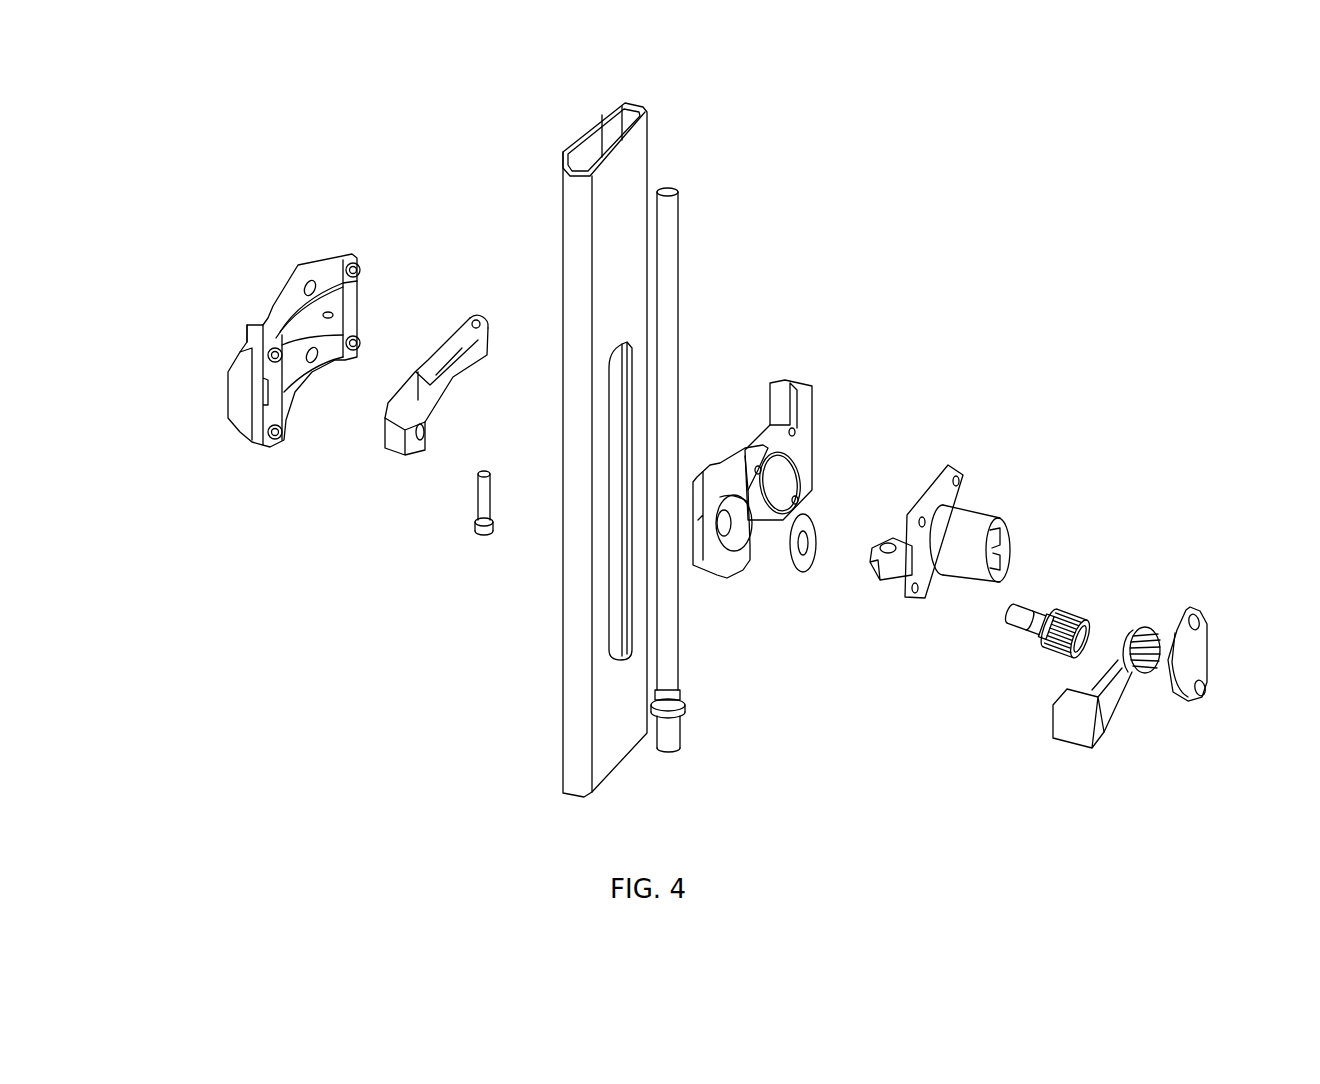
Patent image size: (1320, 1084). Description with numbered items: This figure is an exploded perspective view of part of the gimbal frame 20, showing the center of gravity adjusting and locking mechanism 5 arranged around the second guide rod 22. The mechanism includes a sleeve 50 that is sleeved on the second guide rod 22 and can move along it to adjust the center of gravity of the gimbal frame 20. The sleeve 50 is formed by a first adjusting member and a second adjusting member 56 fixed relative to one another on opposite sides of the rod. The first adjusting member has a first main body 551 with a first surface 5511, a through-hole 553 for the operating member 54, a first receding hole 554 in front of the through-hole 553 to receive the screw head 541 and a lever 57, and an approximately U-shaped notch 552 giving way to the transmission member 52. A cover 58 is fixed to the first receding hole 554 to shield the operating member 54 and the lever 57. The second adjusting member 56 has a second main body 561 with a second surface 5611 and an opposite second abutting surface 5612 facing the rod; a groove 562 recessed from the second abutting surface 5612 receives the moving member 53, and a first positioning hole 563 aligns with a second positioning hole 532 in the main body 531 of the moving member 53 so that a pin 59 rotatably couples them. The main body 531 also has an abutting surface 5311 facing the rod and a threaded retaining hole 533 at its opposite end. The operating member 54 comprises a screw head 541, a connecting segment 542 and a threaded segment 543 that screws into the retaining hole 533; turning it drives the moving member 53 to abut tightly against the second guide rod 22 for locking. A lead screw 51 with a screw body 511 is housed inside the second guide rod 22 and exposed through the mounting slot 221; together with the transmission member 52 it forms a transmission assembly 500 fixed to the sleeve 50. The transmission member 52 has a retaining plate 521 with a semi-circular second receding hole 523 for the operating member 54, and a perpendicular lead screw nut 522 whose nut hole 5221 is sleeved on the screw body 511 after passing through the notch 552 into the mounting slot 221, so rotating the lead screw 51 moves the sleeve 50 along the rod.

The center of gravity adjusting and locking mechanism 5 is at (858, 318).
The gimbal frame 20 is at (548, 702).
The second guide rod 22 is at (632, 168).
The mounting slot 221 is at (614, 620).
The sleeve 50 is at (825, 405).
The lead screw 51 is at (668, 668).
The screw body 511 is at (670, 240).
The transmission member 52 is at (966, 675).
The retaining plate 521 is at (932, 587).
The lead screw nut 522 is at (893, 572).
The nut hole 5221 is at (882, 545).
The second receding hole 523 is at (962, 548).
The moving member 53 is at (402, 443).
The main body 531 is at (436, 370).
The abutting surface 5311 is at (442, 385).
The second positioning hole 532 is at (480, 319).
The retaining hole 533 is at (424, 434).
The operating member 54 is at (1052, 500).
The screw head 541 is at (1085, 625).
The connecting segment 542 is at (1055, 612).
The threaded segment 543 is at (1035, 605).
The first main body 551 is at (780, 380).
The first surface 5511 is at (803, 447).
The notch 552 is at (800, 565).
The through-hole 553 is at (735, 562).
The first receding hole 554 is at (768, 557).
The second adjusting member 56 is at (218, 390).
The second main body 561 is at (260, 323).
The second surface 5611 is at (297, 266).
The second abutting surface 5612 is at (292, 304).
The groove 562 is at (360, 298).
The first positioning hole 563 is at (363, 323).
The lever 57 is at (1085, 725).
The cover 58 is at (1197, 655).
The pin 59 is at (478, 508).
The transmission assembly 500 is at (912, 722).